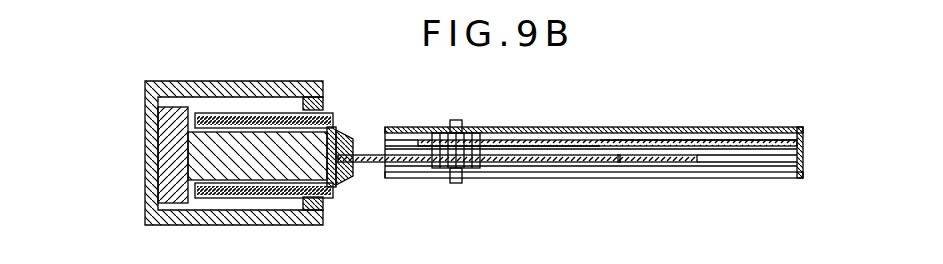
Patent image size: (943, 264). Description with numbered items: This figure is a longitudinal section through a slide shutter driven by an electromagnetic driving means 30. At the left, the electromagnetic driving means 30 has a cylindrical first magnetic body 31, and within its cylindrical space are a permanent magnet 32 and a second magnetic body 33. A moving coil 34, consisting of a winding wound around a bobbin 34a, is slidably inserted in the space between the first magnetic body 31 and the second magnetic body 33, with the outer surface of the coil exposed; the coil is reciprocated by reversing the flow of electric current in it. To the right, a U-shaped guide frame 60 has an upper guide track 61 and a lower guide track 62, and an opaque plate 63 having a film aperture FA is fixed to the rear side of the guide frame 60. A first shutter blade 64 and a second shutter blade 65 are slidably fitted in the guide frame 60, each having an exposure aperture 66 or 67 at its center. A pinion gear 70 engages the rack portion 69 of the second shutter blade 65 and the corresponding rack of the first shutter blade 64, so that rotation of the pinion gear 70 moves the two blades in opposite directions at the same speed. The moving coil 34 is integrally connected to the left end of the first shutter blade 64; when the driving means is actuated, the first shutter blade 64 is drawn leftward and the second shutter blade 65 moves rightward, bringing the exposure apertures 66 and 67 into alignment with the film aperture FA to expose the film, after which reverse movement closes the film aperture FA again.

The electromagnetic driving means 30 is at (270, 147).
The first magnetic body 31 is at (201, 84).
The permanent magnet 32 is at (184, 190).
The second magnetic body 33 is at (263, 163).
The moving coil 34 is at (292, 113).
The bobbin 34a is at (343, 135).
The guide frame 60 is at (570, 142).
The upper guide track 61 is at (733, 162).
The lower guide track 62 is at (410, 147).
The opaque plate 63 is at (732, 127).
The first shutter blade 64 is at (665, 162).
The second shutter blade 65 is at (578, 140).
The exposure aperture 66 is at (557, 162).
The exposure aperture 67 is at (668, 140).
The rack portion 69 is at (493, 141).
The pinion gear 70 is at (457, 145).
The film aperture FA is at (607, 127).